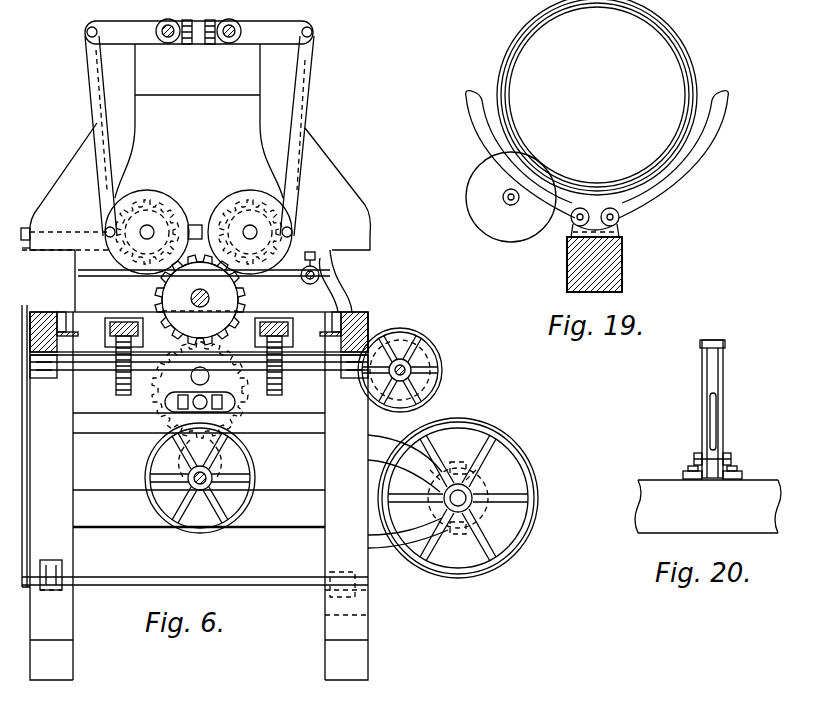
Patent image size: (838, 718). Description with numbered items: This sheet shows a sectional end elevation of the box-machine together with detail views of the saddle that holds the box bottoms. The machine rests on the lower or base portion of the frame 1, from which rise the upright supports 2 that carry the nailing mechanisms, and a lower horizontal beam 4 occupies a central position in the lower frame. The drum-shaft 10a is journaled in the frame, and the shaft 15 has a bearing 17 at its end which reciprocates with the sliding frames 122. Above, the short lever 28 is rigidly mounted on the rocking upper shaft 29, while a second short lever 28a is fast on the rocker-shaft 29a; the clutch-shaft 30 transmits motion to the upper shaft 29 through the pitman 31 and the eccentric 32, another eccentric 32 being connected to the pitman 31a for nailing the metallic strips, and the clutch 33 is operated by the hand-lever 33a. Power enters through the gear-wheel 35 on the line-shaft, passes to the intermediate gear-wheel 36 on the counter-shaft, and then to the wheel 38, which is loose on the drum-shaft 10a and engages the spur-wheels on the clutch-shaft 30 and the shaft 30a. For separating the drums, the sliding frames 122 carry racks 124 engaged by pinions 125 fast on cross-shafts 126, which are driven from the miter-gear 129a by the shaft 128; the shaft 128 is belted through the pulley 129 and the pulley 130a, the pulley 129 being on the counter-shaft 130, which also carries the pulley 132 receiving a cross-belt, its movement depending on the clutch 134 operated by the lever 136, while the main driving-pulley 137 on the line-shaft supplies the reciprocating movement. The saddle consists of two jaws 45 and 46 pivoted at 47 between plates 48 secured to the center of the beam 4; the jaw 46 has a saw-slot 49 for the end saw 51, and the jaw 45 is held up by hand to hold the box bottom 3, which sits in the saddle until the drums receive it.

In FIG. 6, the lower or base portion of the frame 1 is at (298, 512).
In FIG. 6, the upright supports 2 is at (200, 217).
In FIG. 19, the drum 3 is at (597, 97).
In FIG. 19, the lower horizontal beam 4 is at (622, 262).
In FIG. 20, the lower horizontal beam 4 is at (708, 506).
In FIG. 6, the drum-shaft 10a is at (208, 296).
In FIG. 6, the shaft 15 is at (318, 270).
In FIG. 6, the bearing 17 is at (335, 281).
In FIG. 6, the short lever 28 is at (241, 31).
In FIG. 6, the bearing 28a is at (149, 31).
In FIG. 6, the upper shaft 29 is at (168, 43).
In FIG. 6, the rocker-shaft 29a is at (229, 43).
In FIG. 6, the clutch-shaft 30 is at (150, 228).
In FIG. 6, the shaft 30a is at (248, 230).
In FIG. 6, the pitman 31 is at (96, 112).
In FIG. 6, the pitman 31a is at (295, 185).
In FIG. 6, the eccentric 32 is at (160, 190).
In FIG. 6, the clutch 33 is at (30, 225).
In FIG. 6, the hand-lever 33a is at (30, 252).
In FIG. 6, the gear-wheel 35 is at (178, 466).
In FIG. 6, the intermediate gear-wheel 36 is at (200, 390).
In FIG. 6, the wheel 38 is at (200, 300).
In FIG. 19, the jaw 45 is at (712, 148).
In FIG. 19, the jaw 46 is at (480, 138).
In FIG. 20, the jaw 46 is at (723, 380).
In FIG. 19, the pivot 47 is at (574, 224).
In FIG. 20, the pivot 47 is at (731, 459).
In FIG. 19, the plates 48 is at (620, 232).
In FIG. 20, the plates 48 is at (683, 471).
In FIG. 20, the saw-slot 49 is at (716, 418).
In FIG. 19, the end saw 51 is at (468, 215).
In FIG. 6, the sliding frame 122 is at (58, 300).
In FIG. 6, the rack 124 is at (105, 334).
In FIG. 6, the pinion 125 is at (116, 386).
In FIG. 6, the cross-shaft 126 is at (343, 376).
In FIG. 6, the shaft 128 is at (438, 362).
In FIG. 6, the pulley 129 is at (530, 450).
In FIG. 6, the miter-gear 129a is at (425, 335).
In FIG. 6, the counter-shaft 130 is at (470, 508).
In FIG. 6, the pulley 130a is at (442, 383).
In FIG. 6, the pulley 132 is at (522, 468).
In FIG. 6, the clutch 134 is at (463, 470).
In FIG. 6, the lever 136 is at (27, 405).
In FIG. 6, the main driving-pulley 137 is at (175, 532).